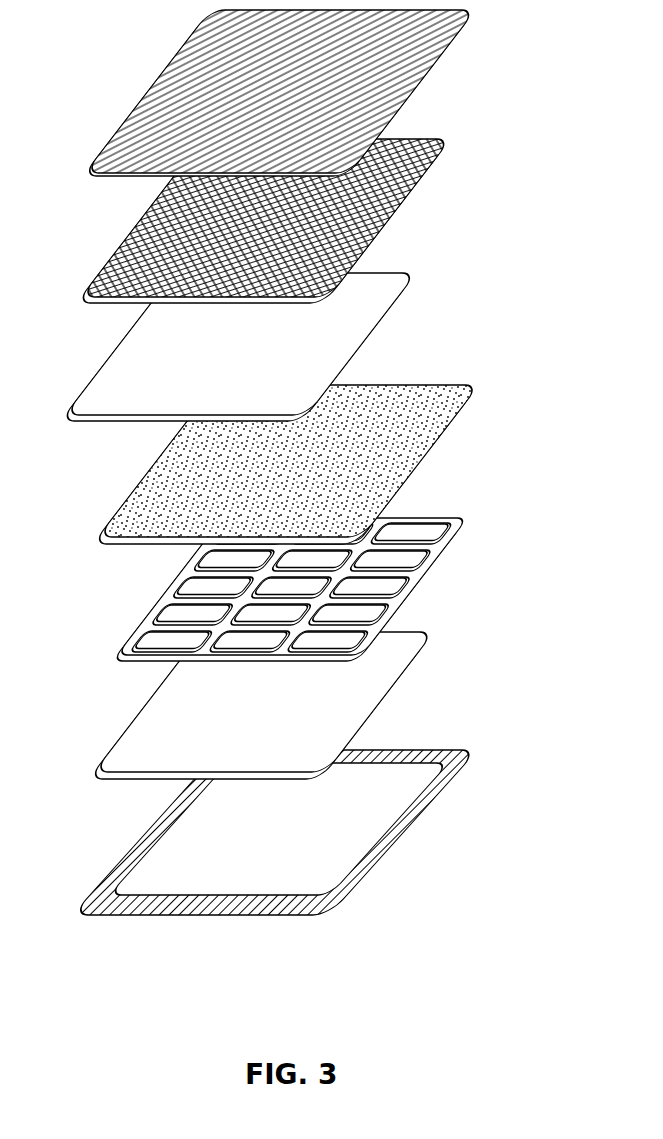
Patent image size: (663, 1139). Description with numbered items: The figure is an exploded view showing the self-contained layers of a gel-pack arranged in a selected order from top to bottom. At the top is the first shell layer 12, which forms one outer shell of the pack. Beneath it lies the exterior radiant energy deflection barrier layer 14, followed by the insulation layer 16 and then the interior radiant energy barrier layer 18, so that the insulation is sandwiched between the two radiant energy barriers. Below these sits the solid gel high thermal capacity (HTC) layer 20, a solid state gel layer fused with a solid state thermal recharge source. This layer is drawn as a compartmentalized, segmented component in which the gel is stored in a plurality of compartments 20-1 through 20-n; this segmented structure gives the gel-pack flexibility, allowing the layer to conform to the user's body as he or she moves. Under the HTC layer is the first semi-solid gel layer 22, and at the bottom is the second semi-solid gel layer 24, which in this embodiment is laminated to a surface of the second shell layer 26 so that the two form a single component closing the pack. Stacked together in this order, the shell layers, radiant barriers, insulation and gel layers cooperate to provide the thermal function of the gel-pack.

The first shell layer 12 is at (157, 78).
The exterior radiant energy deflection barrier layer 14 is at (138, 223).
The insulation layer 16 is at (110, 357).
The interior radiant energy barrier layer 18 is at (140, 483).
The solid gel high thermal capacity (HTC) layer 20 is at (148, 614).
The compartment 20-1 is at (428, 531).
The compartment 20-n is at (400, 565).
The first semi-solid gel layer 22 is at (148, 702).
The second semi-solid gel layer 24 is at (312, 831).
The second shell layer 26 is at (148, 830).